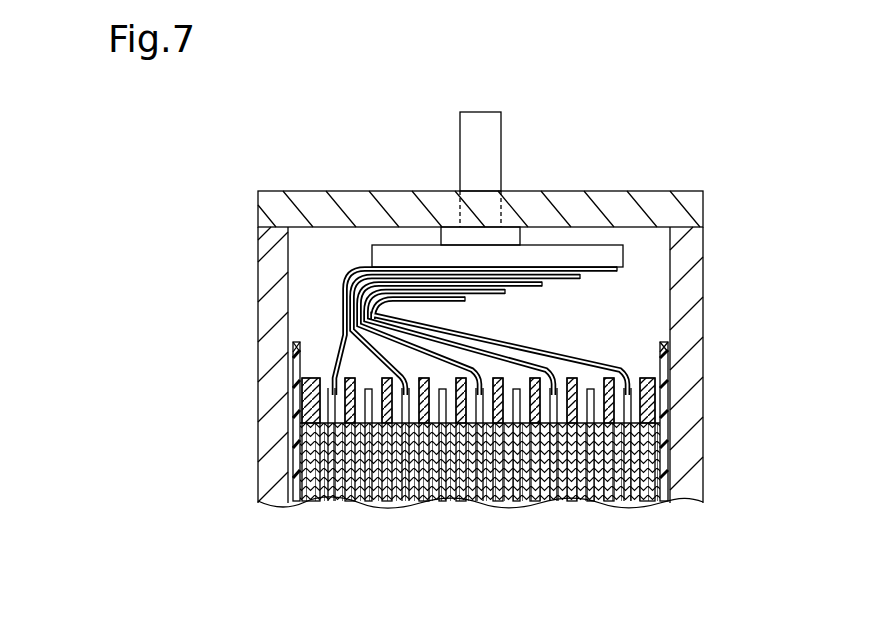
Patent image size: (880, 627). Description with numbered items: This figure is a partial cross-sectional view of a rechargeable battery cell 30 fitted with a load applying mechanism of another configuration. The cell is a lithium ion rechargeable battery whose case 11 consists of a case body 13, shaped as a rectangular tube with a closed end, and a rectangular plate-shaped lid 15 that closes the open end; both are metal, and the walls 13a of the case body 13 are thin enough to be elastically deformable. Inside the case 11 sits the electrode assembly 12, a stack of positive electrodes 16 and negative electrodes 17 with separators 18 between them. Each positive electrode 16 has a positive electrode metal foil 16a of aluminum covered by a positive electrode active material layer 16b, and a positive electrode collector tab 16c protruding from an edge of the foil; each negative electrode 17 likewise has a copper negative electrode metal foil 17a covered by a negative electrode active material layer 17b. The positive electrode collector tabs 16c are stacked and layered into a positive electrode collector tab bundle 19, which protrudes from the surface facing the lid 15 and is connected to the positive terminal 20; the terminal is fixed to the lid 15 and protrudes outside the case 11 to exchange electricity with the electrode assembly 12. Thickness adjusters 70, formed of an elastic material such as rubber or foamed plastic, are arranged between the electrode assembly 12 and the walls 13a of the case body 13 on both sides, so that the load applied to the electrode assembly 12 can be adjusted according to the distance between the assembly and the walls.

The rechargeable battery cell 30 is at (686, 177).
The positive terminal 20 is at (501, 140).
The case 11 is at (199, 197).
The lid 15 is at (257, 208).
The case body 13 is at (257, 238).
The wall 13a is at (257, 400).
The positive electrode collector tab bundle 19 is at (343, 291).
The electrode assembly 12 is at (475, 459).
The positive electrode 16 is at (417, 469).
The positive electrode metal foil 16a is at (333, 503).
The positive electrode active material layer 16b is at (322, 503).
The positive electrode collector tab 16c is at (293, 347).
The negative electrode 17 is at (510, 483).
The negative electrode metal foil 17a is at (396, 503).
The negative electrode active material layer 17b is at (417, 545).
The separator 18 is at (385, 503).
The thickness adjuster 70 is at (290, 450).